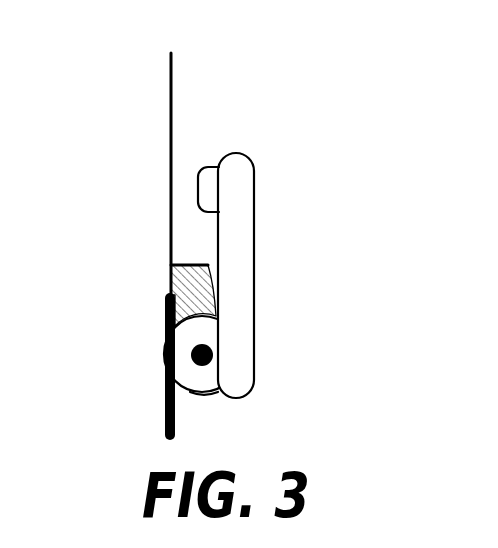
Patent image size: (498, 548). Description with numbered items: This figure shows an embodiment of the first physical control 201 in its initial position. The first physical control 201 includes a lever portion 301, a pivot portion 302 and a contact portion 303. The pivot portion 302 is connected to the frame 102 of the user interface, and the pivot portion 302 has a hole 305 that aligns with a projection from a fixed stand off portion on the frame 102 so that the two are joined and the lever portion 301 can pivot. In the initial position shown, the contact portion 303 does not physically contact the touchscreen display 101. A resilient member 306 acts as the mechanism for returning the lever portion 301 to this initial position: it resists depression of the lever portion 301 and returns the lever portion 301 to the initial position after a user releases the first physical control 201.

The touchscreen display 101 is at (172, 57).
The frame 102 is at (165, 384).
The first physical control 201 is at (328, 208).
The lever portion 301 is at (256, 273).
The pivot portion 302 is at (206, 396).
The contact portion 303 is at (204, 165).
The hole 305 is at (192, 353).
The resilient member 306 is at (178, 266).